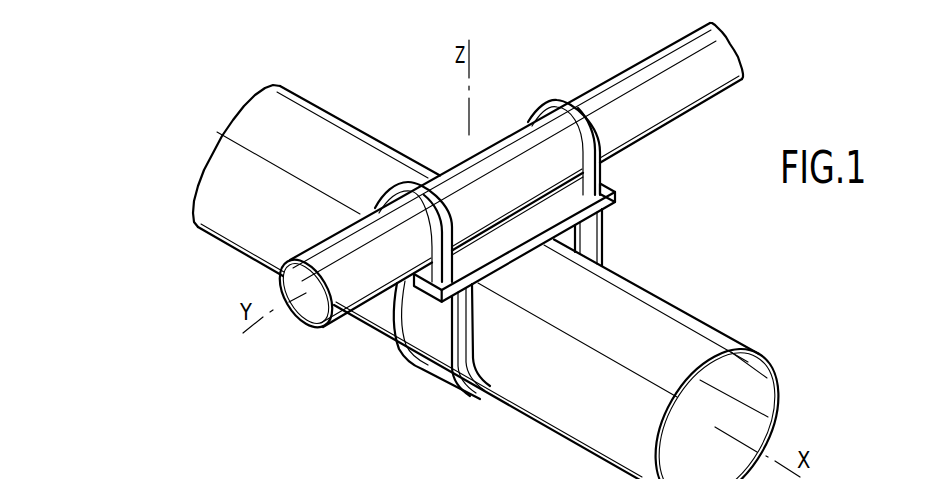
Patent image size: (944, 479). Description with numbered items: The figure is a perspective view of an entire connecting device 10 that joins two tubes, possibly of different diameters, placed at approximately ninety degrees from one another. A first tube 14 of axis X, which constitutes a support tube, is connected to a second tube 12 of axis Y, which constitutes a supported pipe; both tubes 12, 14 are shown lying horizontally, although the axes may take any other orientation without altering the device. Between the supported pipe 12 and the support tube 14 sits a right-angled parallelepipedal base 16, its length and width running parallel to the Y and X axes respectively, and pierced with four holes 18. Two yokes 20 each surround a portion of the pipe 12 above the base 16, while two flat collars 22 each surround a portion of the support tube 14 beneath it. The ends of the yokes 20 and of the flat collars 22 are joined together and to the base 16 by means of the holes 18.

The connecting device 10 is at (616, 228).
The second tube 12 is at (675, 50).
The first tube 14 is at (655, 330).
The base 16 is at (538, 242).
The holes 18 is at (615, 188).
The yokes 20 is at (539, 102).
The flat collars 22 is at (410, 360).